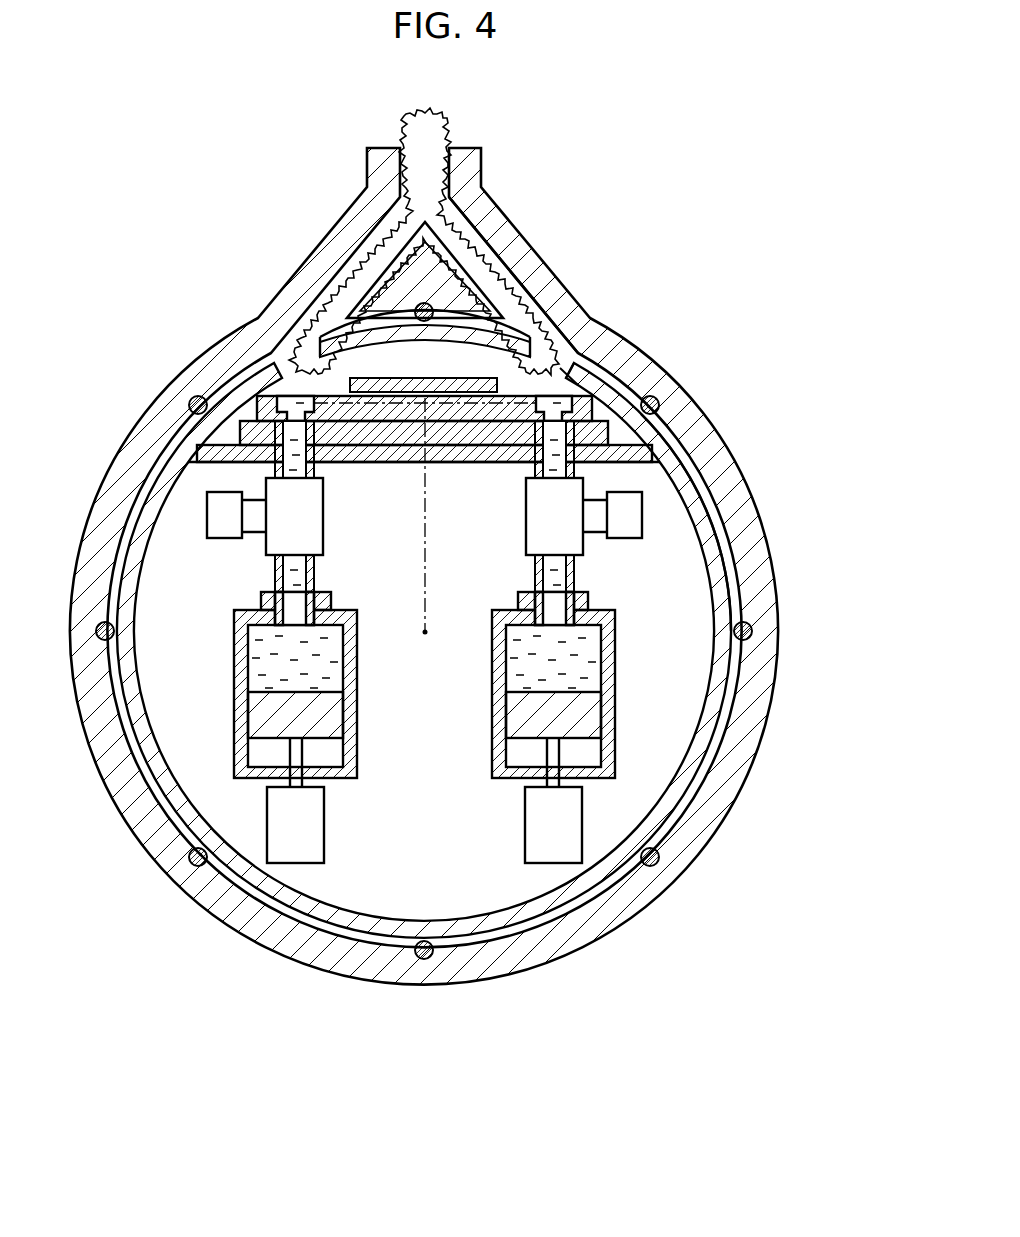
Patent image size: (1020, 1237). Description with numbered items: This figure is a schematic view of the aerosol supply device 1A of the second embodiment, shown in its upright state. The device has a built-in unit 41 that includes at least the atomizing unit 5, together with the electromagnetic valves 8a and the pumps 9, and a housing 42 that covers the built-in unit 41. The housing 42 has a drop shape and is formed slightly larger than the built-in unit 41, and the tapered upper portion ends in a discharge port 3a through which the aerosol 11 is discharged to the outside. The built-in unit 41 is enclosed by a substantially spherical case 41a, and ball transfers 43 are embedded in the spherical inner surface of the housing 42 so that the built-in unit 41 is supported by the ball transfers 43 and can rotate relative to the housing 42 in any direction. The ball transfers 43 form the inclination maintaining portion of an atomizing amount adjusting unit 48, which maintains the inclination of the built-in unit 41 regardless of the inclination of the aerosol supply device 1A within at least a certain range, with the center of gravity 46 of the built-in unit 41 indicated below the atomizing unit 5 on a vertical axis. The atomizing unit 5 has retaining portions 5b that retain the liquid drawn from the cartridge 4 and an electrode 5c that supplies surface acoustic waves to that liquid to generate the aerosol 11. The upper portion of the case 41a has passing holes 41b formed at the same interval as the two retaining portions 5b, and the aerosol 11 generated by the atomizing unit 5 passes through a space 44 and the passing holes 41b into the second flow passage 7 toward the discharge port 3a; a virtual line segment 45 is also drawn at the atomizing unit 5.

The aerosol supply device 1A is at (462, 566).
The discharge port 3a is at (443, 138).
The cartridge 4 is at (628, 706).
The atomizing unit 5 is at (427, 383).
The retaining portion 5b is at (568, 389).
The electrode 5c is at (404, 379).
The second flow passage 7 is at (490, 262).
The electromagnetic valve 8a is at (206, 513).
The pump 9 is at (258, 838).
The aerosol 11 is at (513, 297).
The built-in unit 41 is at (732, 548).
The case 41a is at (724, 522).
The passing hole 41b is at (567, 349).
The housing 42 is at (760, 585).
The ball transfer 43 is at (496, 631).
The atomizing amount adjusting unit 48 is at (755, 630).
The space 44 is at (655, 450).
The virtual line segment 45 is at (562, 407).
The center of gravity 46 is at (428, 640).